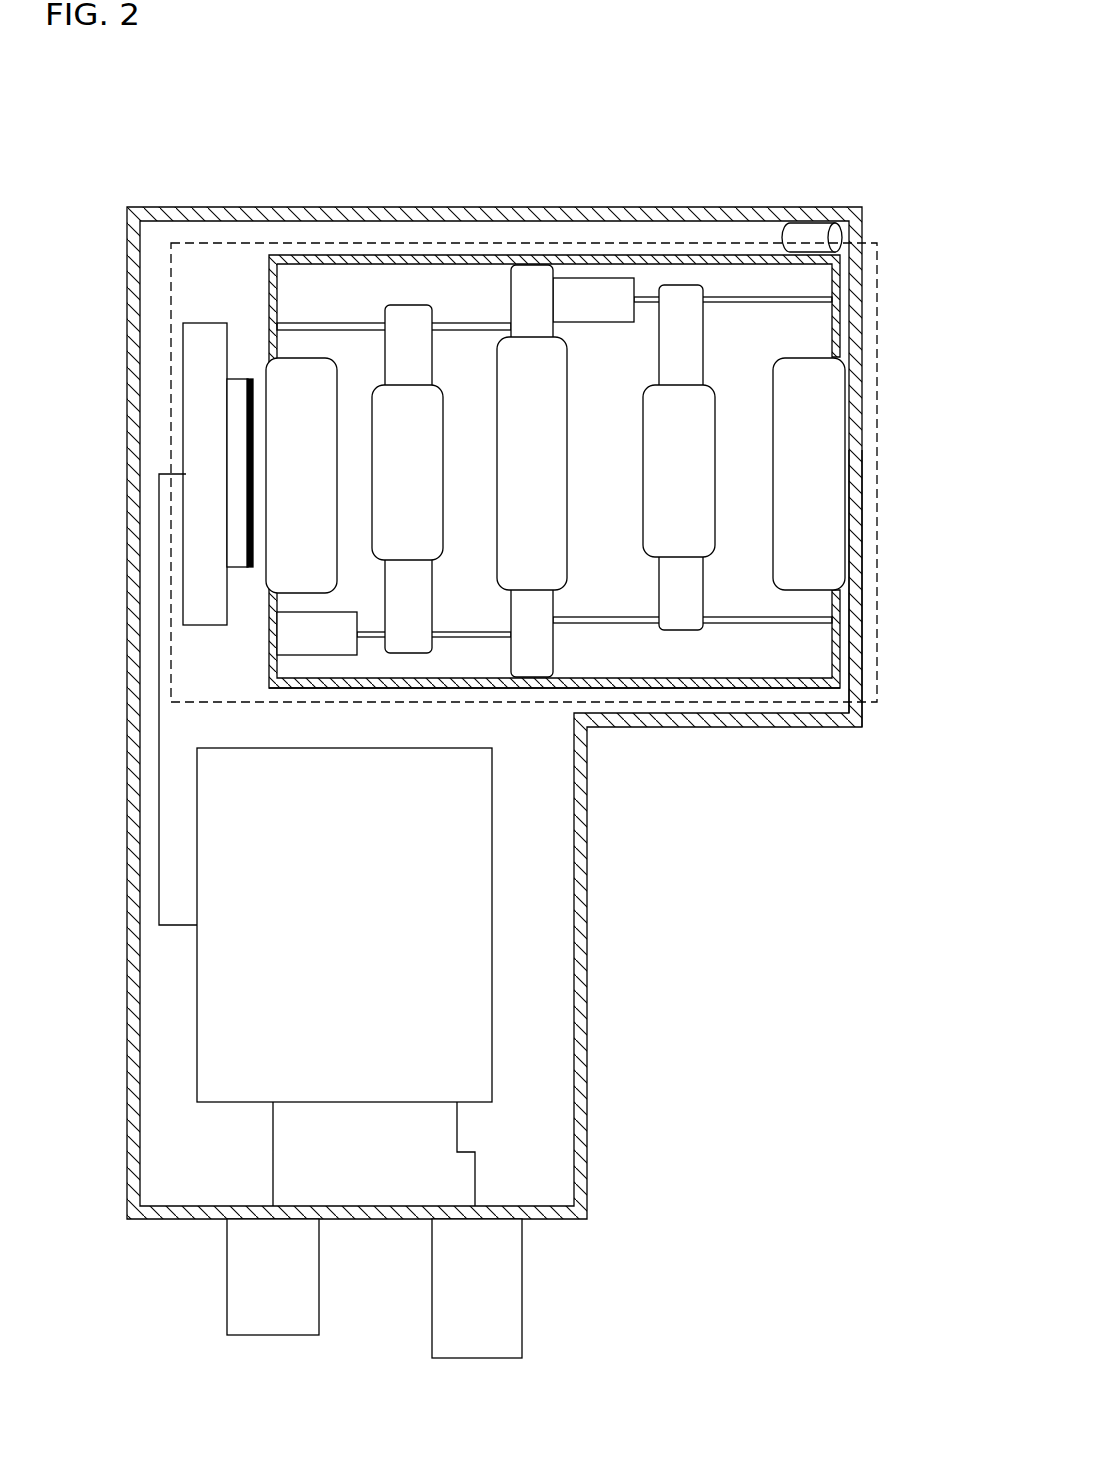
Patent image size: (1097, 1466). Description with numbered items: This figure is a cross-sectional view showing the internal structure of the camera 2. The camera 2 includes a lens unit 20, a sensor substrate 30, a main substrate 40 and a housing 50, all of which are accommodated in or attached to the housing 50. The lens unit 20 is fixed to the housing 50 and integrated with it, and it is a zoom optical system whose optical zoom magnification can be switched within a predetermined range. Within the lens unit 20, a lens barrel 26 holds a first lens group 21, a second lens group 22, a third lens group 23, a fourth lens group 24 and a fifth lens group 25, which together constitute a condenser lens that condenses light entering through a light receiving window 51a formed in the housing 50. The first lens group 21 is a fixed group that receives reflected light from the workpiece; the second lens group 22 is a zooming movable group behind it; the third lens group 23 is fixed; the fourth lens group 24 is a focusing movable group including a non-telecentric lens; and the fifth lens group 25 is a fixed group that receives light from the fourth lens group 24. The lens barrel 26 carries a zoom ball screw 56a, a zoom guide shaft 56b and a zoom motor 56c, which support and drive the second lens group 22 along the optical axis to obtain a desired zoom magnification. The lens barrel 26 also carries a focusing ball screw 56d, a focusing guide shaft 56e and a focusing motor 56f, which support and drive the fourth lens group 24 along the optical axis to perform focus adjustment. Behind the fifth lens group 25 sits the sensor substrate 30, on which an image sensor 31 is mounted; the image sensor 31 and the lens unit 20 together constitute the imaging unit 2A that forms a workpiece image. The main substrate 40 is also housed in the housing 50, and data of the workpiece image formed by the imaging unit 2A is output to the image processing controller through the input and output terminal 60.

The camera 2 is at (536, 126).
The imaging unit 2A is at (877, 283).
The lens unit 20 is at (646, 253).
The first lens group 21 is at (821, 357).
The second lens group 22 is at (716, 423).
The third lens group 23 is at (495, 381).
The fourth lens group 24 is at (372, 430).
The fifth lens group 25 is at (316, 357).
The lens barrel 26 is at (637, 688).
The sensor substrate 30 is at (180, 362).
The image sensor 31 is at (238, 378).
The main substrate 40 is at (197, 1040).
The housing 50 is at (423, 207).
The light receiving window 51a is at (854, 592).
The zoom ball screw 56a is at (718, 298).
The zoom guide shaft 56b is at (645, 623).
The zoom motor 56c is at (585, 277).
The focusing ball screw 56d is at (487, 637).
The focusing guide shaft 56e is at (348, 322).
The focusing motor 56f is at (285, 656).
The input and output terminal 60 is at (227, 1296).